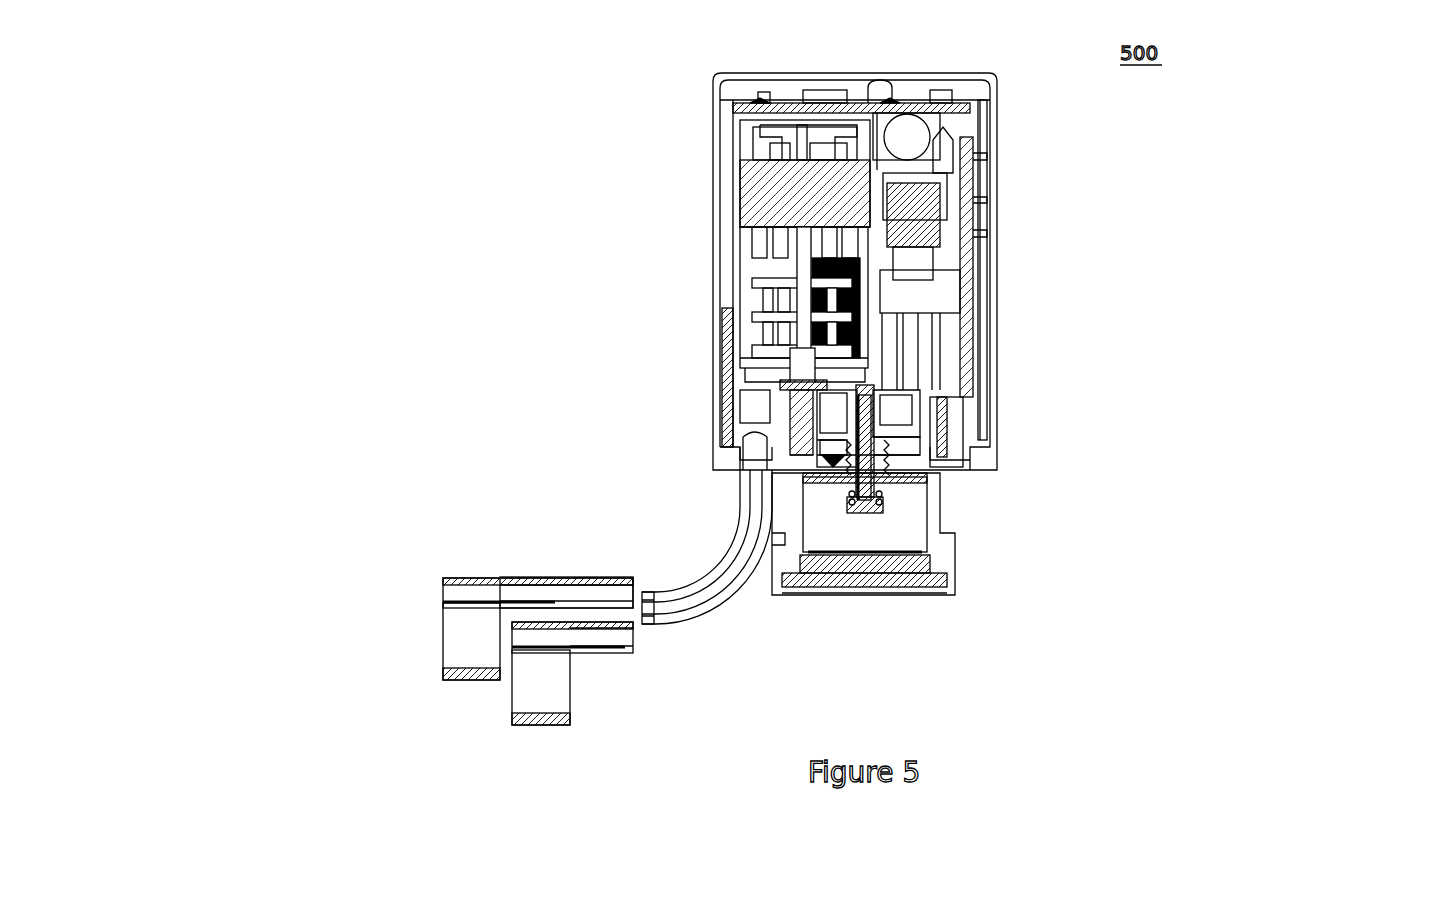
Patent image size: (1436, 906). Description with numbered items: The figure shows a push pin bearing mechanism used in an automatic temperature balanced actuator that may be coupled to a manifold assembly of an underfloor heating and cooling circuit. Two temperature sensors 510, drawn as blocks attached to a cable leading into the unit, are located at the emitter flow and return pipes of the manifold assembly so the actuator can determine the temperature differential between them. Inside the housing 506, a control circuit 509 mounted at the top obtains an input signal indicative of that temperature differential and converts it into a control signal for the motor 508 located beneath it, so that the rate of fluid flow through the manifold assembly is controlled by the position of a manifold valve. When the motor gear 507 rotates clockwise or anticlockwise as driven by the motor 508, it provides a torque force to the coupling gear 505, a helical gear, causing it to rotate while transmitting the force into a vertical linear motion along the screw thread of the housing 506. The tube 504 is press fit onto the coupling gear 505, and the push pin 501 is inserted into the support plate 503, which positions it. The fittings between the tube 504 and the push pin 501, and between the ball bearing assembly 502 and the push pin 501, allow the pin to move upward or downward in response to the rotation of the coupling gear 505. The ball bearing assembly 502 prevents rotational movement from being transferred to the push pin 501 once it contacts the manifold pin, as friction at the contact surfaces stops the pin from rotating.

The push pin 501 is at (893, 512).
The ball bearing assembly 502 is at (887, 495).
The support plate 503 is at (887, 482).
The tube 504 is at (878, 415).
The coupling gear 505 is at (830, 462).
The housing 506 is at (783, 487).
The motor gear 507 is at (797, 413).
The motor 508 is at (733, 199).
The control circuit 509 is at (747, 103).
The temperature sensors 510 is at (517, 641).